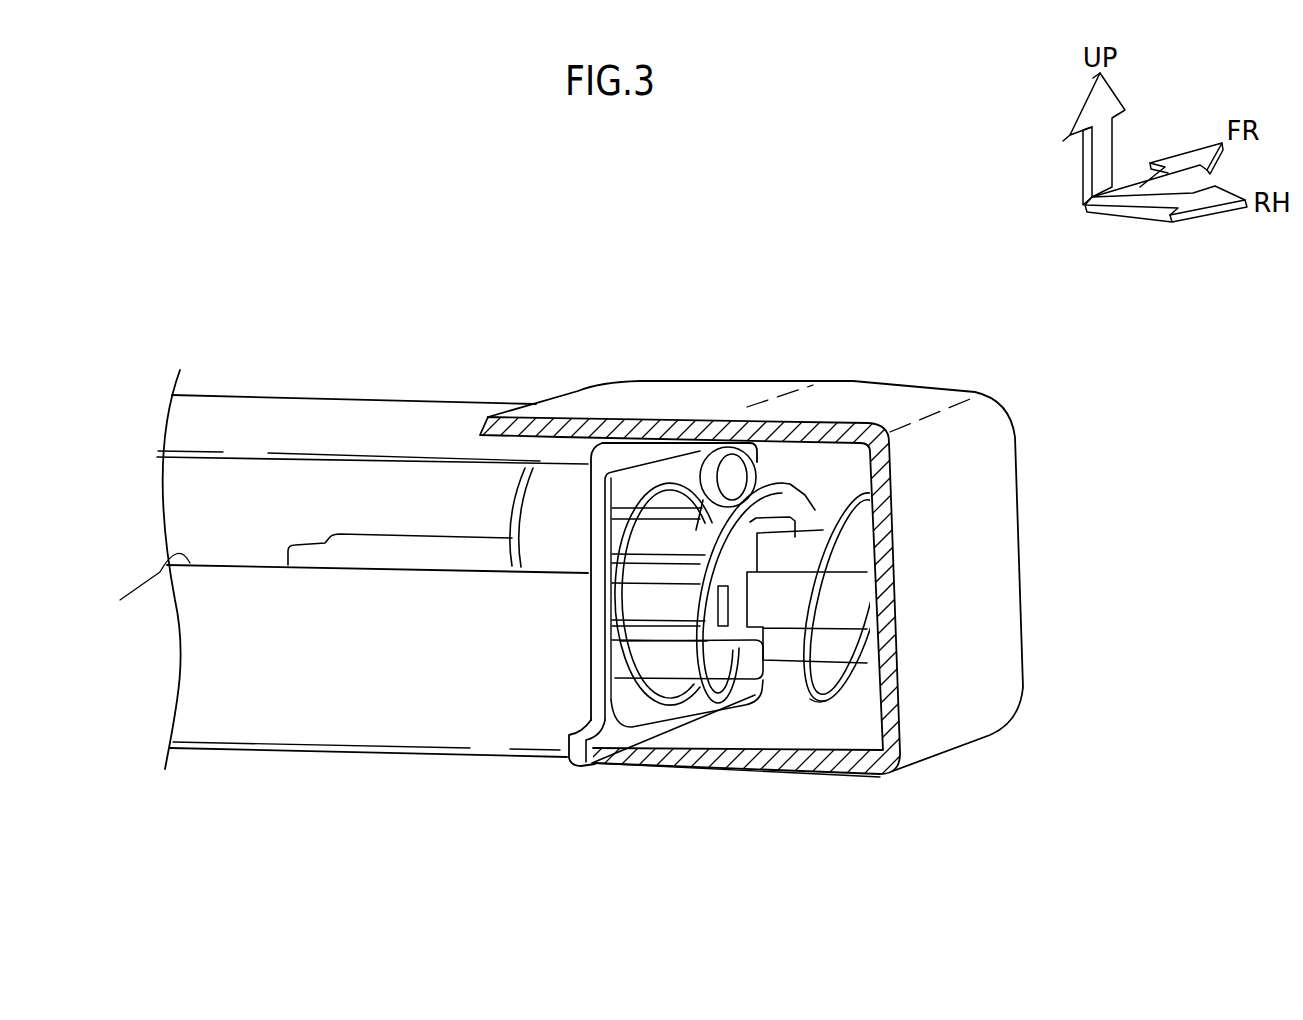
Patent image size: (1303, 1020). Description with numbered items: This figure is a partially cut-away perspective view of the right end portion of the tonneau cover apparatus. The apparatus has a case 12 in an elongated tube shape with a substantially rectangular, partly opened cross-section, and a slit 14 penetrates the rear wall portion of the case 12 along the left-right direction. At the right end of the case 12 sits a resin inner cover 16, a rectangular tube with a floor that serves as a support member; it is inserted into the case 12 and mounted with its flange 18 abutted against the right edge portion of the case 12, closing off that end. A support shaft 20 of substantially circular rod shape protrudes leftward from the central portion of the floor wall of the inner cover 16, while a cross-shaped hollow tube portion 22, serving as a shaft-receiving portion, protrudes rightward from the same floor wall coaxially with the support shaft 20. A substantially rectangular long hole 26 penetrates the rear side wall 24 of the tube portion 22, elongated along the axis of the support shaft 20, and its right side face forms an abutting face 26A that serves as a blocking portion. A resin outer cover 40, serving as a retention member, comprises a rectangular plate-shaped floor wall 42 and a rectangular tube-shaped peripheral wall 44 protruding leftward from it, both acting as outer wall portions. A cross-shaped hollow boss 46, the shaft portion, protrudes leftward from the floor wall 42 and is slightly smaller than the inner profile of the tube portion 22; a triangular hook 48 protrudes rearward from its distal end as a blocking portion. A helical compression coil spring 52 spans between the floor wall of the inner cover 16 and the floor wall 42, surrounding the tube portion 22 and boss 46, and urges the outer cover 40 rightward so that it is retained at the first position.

The case 12 is at (283, 397).
The slit 14 is at (91, 614).
The inner cover 16 is at (508, 509).
The flange 18 is at (613, 443).
The support shaft 20 is at (390, 535).
The tube portion 22 is at (703, 517).
The rear side wall 24 is at (620, 630).
The long hole 26 is at (657, 605).
The abutting face 26A is at (700, 608).
The outer cover 40 is at (701, 572).
The floor wall 42 is at (1000, 522).
The peripheral wall 44 is at (670, 382).
The boss 46 is at (787, 605).
The hook 48 is at (705, 607).
The compression coil spring 52 is at (825, 703).